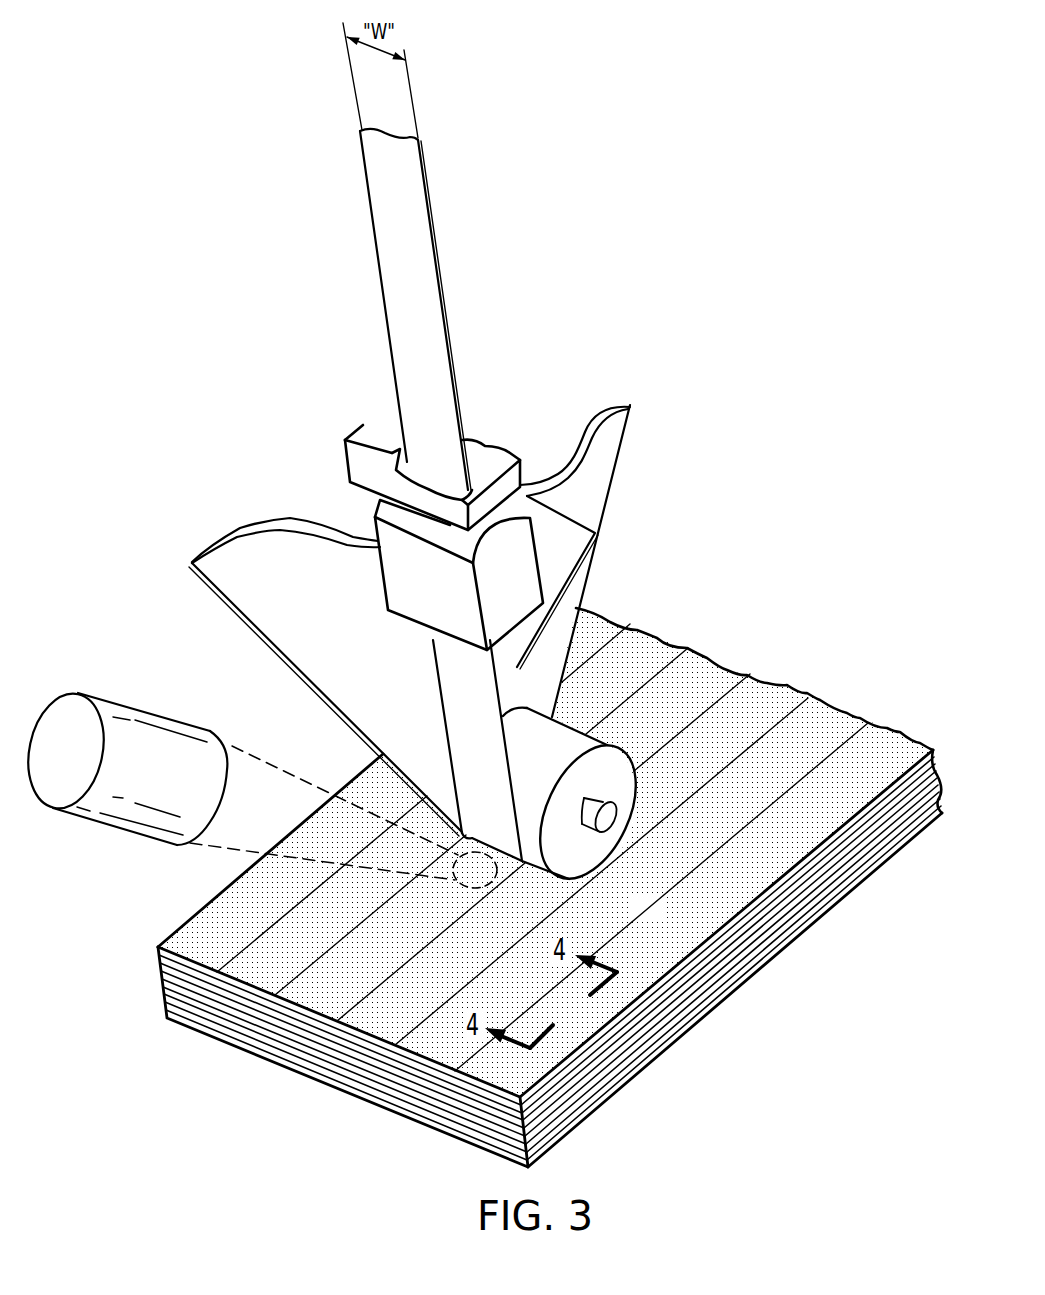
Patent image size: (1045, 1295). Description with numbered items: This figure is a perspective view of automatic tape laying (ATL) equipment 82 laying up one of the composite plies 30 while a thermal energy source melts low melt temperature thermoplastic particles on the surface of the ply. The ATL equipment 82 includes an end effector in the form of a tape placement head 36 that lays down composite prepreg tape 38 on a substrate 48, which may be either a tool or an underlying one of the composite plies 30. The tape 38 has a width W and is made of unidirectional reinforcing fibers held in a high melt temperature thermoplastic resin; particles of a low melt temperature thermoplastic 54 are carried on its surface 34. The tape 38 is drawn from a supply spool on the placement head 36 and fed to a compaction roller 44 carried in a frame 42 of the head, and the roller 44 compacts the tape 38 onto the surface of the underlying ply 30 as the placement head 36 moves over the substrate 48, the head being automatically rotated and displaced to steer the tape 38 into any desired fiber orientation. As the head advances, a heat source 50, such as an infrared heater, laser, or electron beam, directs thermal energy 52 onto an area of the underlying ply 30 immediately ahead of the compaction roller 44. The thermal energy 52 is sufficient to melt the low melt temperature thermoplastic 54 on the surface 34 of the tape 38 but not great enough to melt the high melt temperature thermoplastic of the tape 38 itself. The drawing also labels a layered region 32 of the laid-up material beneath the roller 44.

The composite ply 30 is at (156, 981).
The top surface of substrate 32 is at (897, 737).
The surface 34 is at (756, 850).
The tape placement head 36 is at (518, 350).
The composite prepreg tape 38 is at (393, 295).
The frame / yoke 42 is at (570, 533).
The compaction roller 44 is at (622, 840).
The substrate 48 is at (836, 724).
The heat source 50 is at (145, 710).
The thermal energy 52 is at (282, 777).
The low melt temperature thermoplastic 54 is at (722, 673).
The automatic tape laying equipment 82 is at (150, 305).